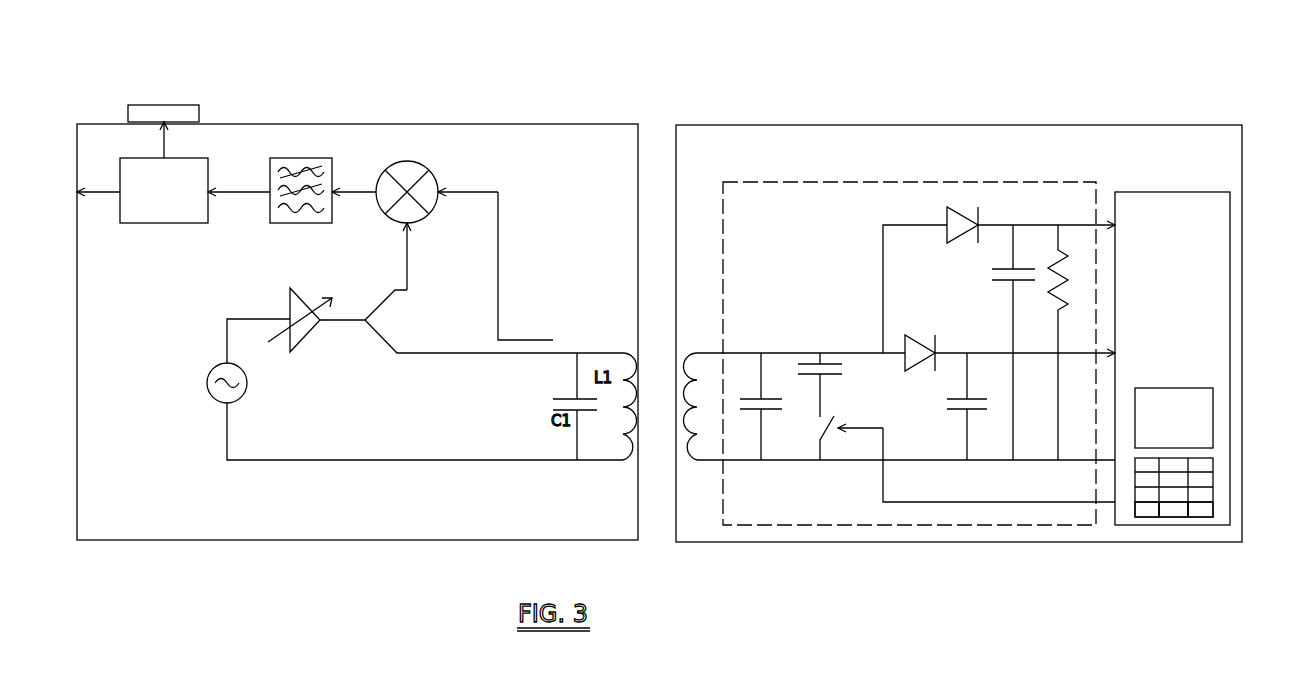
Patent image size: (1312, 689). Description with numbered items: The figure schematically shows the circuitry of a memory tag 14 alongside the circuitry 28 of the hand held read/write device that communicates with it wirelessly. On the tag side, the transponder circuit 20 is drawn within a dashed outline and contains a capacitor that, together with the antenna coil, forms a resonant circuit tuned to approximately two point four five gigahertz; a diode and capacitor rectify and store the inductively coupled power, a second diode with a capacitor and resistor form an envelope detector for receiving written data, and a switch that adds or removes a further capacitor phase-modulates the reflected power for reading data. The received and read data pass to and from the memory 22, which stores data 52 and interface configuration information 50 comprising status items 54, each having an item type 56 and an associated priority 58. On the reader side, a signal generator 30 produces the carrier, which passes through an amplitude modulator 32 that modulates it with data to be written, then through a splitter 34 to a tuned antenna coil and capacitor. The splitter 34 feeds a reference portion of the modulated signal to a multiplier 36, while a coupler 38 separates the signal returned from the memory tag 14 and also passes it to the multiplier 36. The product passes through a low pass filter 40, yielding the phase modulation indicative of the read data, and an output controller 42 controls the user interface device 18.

The memory tag 14 is at (1108, 115).
The user interface device 18 is at (162, 107).
The transponder circuit 20 is at (900, 525).
The memory 22 is at (1172, 358).
The circuitry of the read/write device 28 is at (578, 122).
The signal generator 30 is at (217, 403).
The amplitude modulator 32 is at (288, 308).
The splitter 34 is at (384, 298).
The multiplier 36 is at (404, 167).
The coupler 38 is at (512, 342).
The low pass filter 40 is at (294, 164).
The output controller 42 is at (158, 212).
The interface configuration information 50 is at (1213, 478).
The data 52 is at (1207, 413).
The status items 54 is at (1143, 512).
The item type 56 is at (1173, 512).
The priority 58 is at (1202, 512).